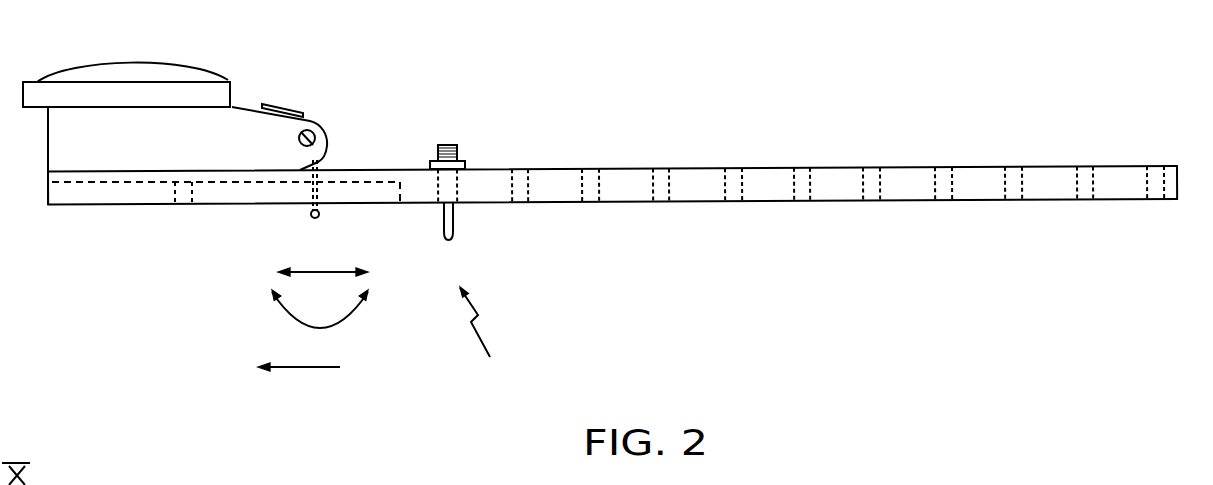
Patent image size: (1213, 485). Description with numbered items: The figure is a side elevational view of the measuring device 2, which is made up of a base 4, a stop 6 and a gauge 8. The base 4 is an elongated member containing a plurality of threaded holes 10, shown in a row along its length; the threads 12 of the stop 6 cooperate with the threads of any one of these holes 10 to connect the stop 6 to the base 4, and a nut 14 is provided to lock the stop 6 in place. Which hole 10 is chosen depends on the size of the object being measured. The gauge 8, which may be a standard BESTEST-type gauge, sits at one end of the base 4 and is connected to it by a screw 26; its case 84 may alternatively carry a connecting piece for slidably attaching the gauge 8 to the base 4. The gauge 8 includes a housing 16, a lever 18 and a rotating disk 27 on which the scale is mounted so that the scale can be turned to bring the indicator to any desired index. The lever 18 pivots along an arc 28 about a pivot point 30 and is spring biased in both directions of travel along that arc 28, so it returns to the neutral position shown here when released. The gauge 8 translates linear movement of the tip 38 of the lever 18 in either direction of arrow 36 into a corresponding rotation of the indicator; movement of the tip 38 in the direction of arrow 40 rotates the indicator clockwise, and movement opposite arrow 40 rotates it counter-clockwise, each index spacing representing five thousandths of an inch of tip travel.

The measuring device 2 is at (482, 337).
The base 4 is at (763, 180).
The stop 6 is at (448, 242).
The gauge 8 is at (176, 152).
The threaded holes 10 is at (438, 204).
The threads 12 is at (458, 148).
The nut 14 is at (468, 167).
The housing 16 is at (237, 117).
The lever 18 is at (322, 187).
The screw 26 is at (175, 206).
The rotating disk 27 is at (222, 92).
The arc 28 is at (332, 327).
The pivot point 30 is at (328, 146).
The arrow 36 is at (317, 270).
The tip 38 is at (311, 217).
The arrow 40 is at (307, 368).
The case 84 is at (59, 138).